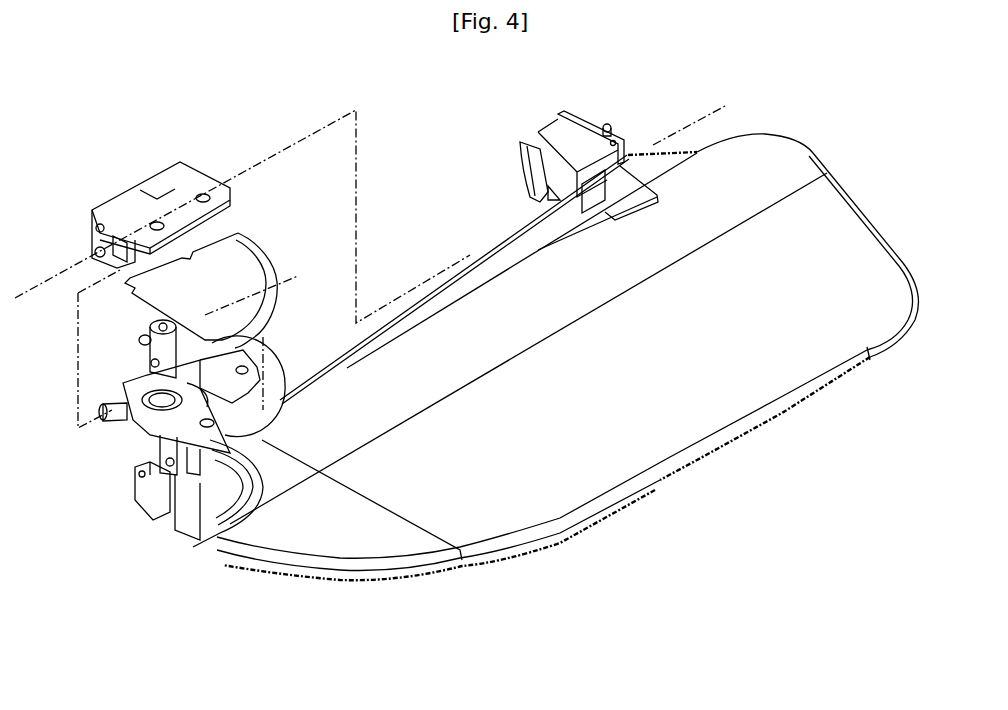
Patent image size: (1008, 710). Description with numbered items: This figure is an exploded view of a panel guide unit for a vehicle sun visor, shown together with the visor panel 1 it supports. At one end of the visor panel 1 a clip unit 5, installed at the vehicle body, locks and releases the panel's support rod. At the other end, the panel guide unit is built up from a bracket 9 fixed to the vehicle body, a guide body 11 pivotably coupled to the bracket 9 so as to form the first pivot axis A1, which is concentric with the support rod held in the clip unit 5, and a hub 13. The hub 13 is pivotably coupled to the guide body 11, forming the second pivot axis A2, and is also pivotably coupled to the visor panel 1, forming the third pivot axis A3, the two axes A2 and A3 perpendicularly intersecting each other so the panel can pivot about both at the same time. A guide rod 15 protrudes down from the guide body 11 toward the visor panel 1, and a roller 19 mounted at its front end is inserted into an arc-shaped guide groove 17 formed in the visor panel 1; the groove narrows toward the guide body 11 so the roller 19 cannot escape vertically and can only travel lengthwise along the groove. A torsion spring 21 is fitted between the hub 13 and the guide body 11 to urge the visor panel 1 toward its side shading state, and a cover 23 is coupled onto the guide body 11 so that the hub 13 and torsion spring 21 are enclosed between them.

The visor panel 1 is at (757, 387).
The clip unit 5 is at (591, 118).
The bracket 9 is at (125, 196).
The guide body 11 is at (274, 392).
The hub 13 is at (140, 355).
The guide rod 15 is at (168, 528).
The guide groove 17 is at (246, 491).
The roller 19 is at (193, 530).
The torsion spring 21 is at (140, 322).
The cover 23 is at (246, 252).
The first pivot axis A1 is at (63, 283).
The second pivot axis A2 is at (126, 490).
The third pivot axis A3 is at (262, 291).